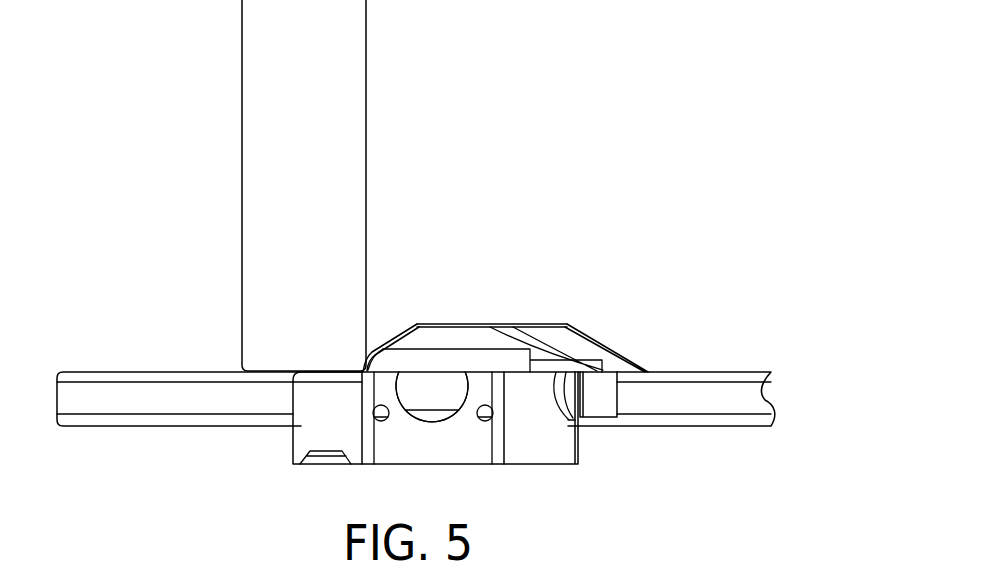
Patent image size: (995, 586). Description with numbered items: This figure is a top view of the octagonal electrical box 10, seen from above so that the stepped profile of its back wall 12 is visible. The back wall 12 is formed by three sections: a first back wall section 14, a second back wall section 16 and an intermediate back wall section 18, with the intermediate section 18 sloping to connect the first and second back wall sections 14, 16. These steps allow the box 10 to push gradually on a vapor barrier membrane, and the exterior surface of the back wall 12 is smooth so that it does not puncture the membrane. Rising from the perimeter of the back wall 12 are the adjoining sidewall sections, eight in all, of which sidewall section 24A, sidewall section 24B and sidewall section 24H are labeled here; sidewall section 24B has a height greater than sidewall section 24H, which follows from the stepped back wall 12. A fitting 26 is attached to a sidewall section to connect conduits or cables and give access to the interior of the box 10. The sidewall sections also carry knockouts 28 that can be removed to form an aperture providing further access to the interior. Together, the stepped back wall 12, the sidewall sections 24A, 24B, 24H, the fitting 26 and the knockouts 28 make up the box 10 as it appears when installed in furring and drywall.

The octagonal electrical box 10 is at (660, 273).
The back wall 12 is at (483, 325).
The first back wall section 14 is at (338, 371).
The second back wall section 16 is at (541, 326).
The intermediate back wall section 18 is at (386, 333).
The sidewall section 24A is at (437, 440).
The sidewall section 24B is at (540, 441).
The sidewall section 24H is at (312, 432).
The fitting 26 is at (603, 385).
The knockout 28 is at (436, 383).